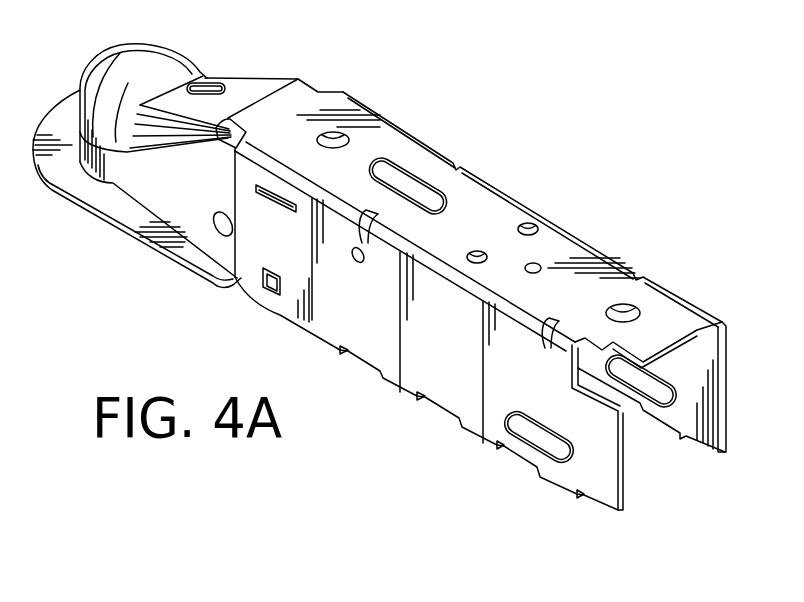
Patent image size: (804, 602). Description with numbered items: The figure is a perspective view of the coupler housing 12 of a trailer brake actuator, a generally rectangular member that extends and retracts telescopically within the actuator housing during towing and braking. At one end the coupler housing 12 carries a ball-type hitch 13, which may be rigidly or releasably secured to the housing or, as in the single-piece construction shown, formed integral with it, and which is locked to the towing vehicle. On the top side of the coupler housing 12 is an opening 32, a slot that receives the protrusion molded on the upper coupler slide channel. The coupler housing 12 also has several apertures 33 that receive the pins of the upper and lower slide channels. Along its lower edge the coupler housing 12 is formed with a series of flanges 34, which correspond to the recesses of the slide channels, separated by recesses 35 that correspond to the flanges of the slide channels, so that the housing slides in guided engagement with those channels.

The coupler housing 12 is at (492, 155).
The ball-type hitch 13 is at (123, 65).
The opening 32 is at (398, 175).
The apertures 33 is at (530, 218).
The flanges 34 is at (317, 342).
The recesses 35 is at (365, 362).